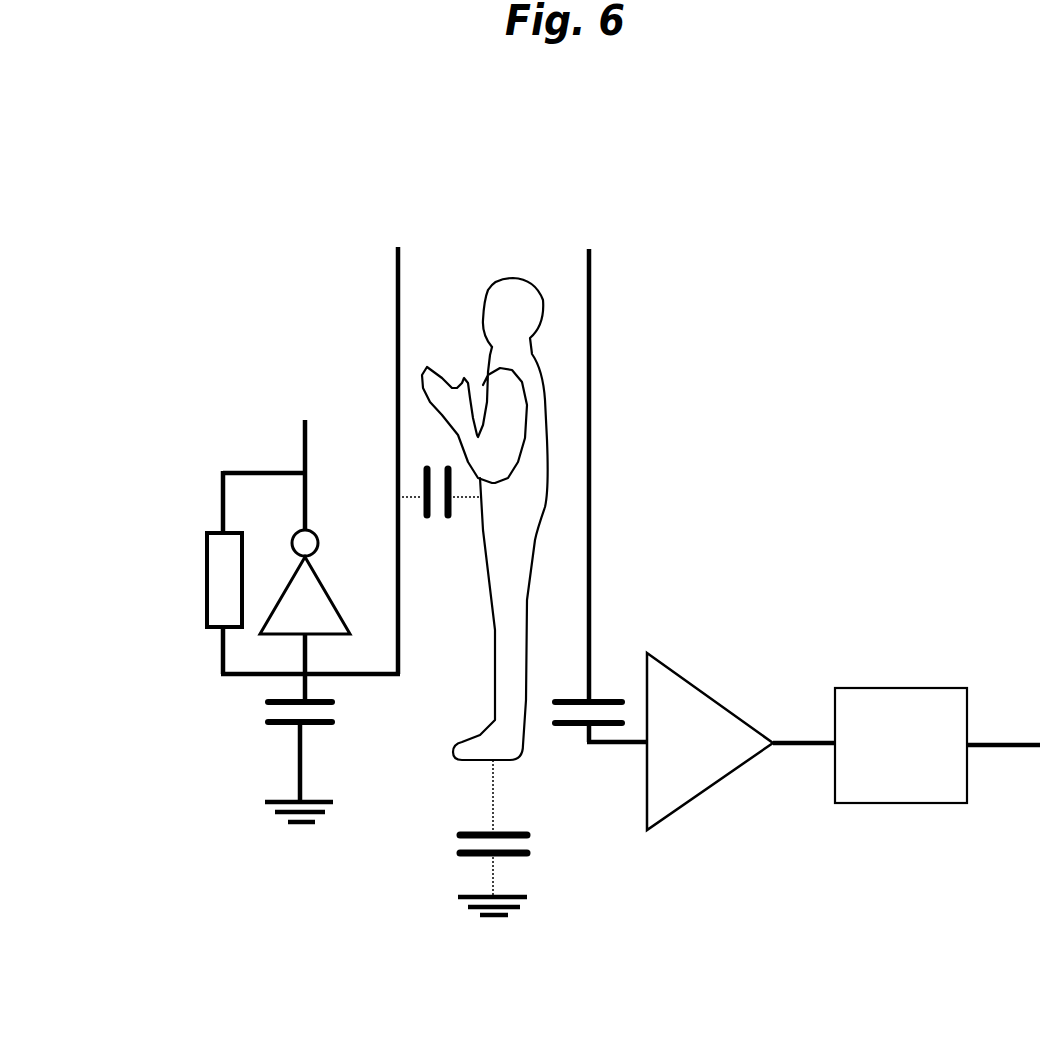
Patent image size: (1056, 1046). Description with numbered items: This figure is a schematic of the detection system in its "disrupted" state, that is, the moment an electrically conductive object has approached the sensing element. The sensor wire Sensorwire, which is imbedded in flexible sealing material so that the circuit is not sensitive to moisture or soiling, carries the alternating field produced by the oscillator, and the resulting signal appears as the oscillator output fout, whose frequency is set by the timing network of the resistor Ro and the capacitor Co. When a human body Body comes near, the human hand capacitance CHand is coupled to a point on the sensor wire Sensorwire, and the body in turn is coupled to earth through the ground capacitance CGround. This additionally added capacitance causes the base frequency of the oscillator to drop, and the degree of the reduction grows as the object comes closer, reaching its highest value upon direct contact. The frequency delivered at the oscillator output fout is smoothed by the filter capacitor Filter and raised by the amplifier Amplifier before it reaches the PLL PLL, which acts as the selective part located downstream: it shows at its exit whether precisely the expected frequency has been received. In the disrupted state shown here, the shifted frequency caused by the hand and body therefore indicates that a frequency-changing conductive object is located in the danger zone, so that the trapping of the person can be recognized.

The sensor wire Sensorwire is at (417, 445).
The oscillator output f-out fout is at (279, 546).
The resistor Ro is at (210, 580).
The capacitor Co is at (282, 762).
The human hand capacitance CHand is at (441, 512).
The human body Body is at (485, 519).
The ground capacitance C_Ground CGround is at (541, 837).
The filter capacitor Filter is at (601, 511).
The amplifier Amplifier is at (741, 737).
The element PLL is at (937, 745).